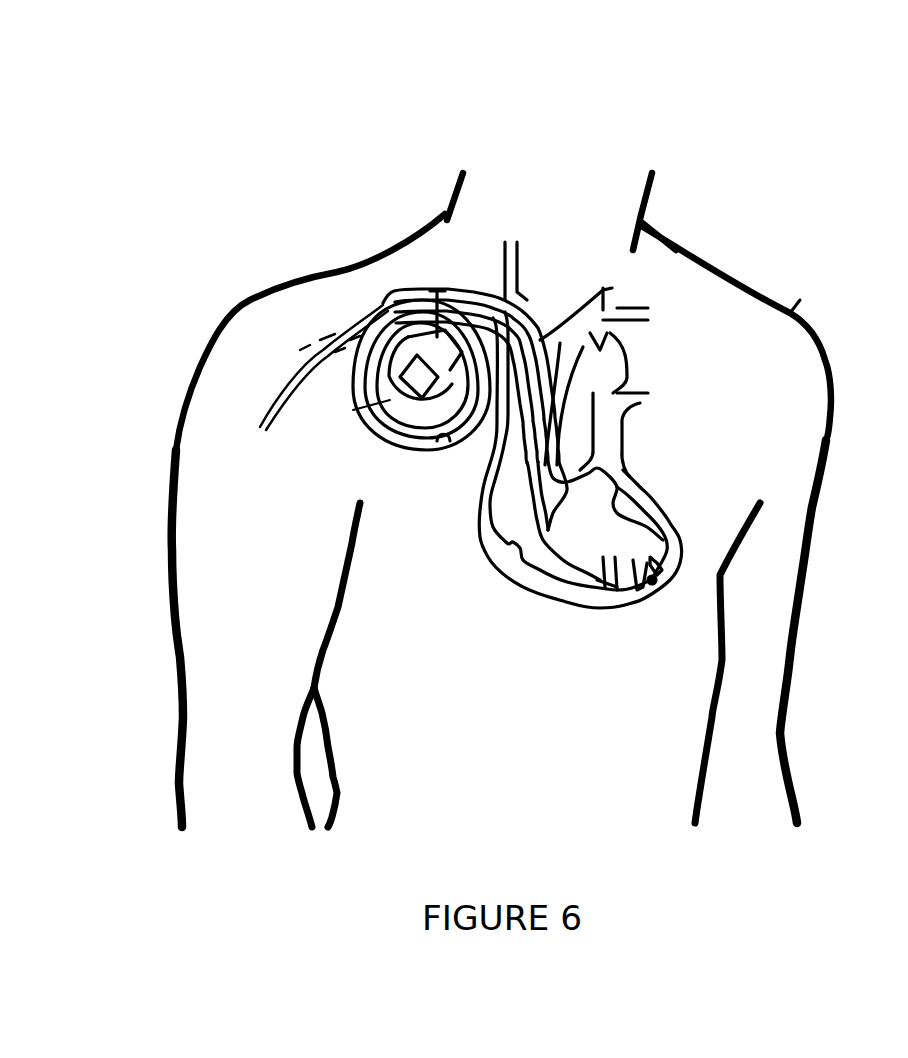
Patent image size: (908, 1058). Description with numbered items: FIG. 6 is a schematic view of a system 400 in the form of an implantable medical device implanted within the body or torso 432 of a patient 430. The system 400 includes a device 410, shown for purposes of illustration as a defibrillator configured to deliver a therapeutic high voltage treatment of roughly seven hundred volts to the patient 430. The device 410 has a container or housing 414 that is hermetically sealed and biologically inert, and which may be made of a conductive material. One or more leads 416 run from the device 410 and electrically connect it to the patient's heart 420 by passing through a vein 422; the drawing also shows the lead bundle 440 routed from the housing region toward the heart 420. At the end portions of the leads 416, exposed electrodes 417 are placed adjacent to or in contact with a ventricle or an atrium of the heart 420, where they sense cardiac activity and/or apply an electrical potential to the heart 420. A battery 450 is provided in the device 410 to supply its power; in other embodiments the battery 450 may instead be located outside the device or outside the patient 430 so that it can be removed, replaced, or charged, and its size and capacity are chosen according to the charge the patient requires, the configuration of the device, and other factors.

The system 400 is at (458, 243).
The device 410 is at (400, 400).
The container or housing 414 is at (430, 410).
The leads 416 is at (450, 463).
The electrodes 417 is at (653, 558).
The heart 420 is at (617, 610).
The vein 422 is at (364, 320).
The patient 430 is at (570, 141).
The body or torso 432 is at (790, 313).
The lead 440 is at (523, 422).
The battery 450 is at (353, 410).